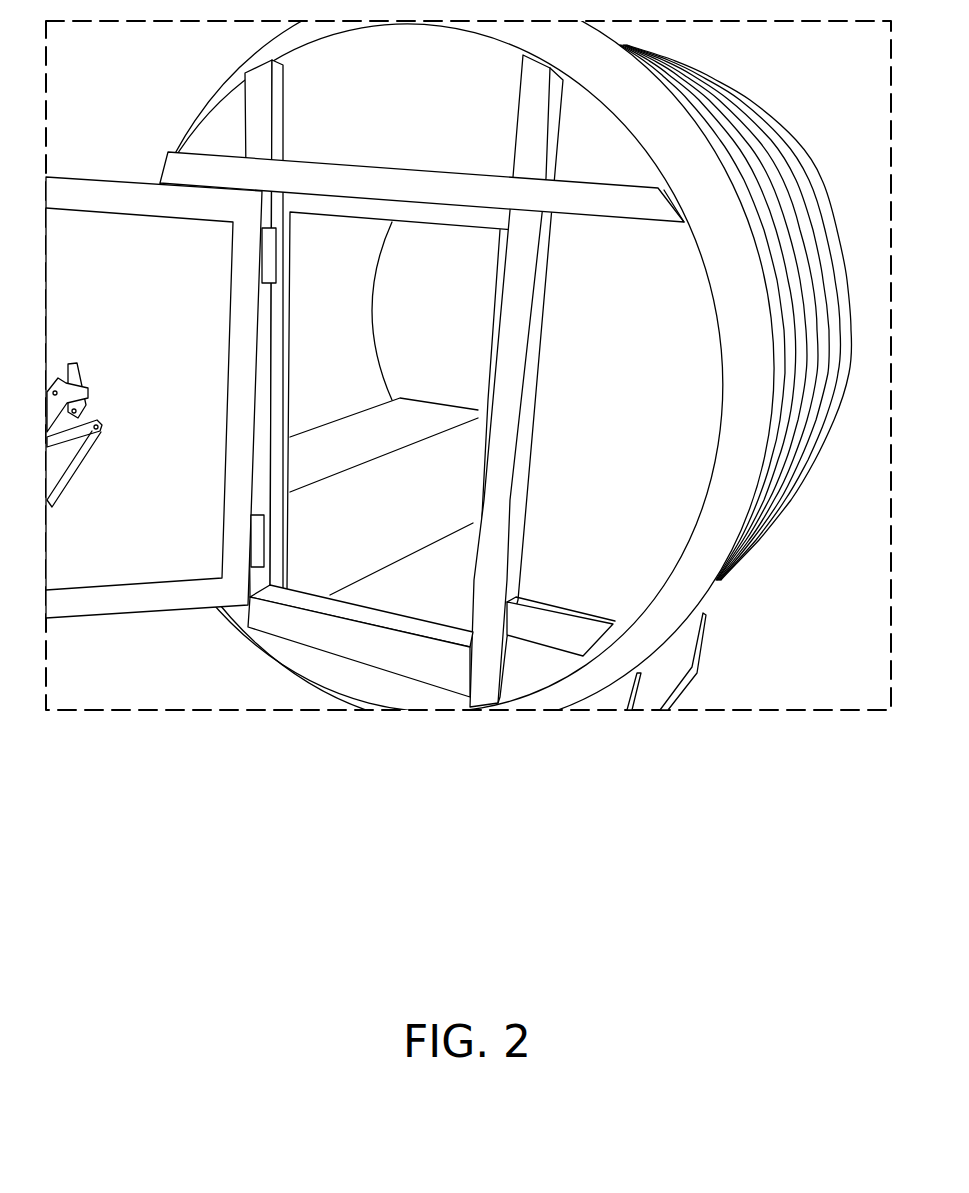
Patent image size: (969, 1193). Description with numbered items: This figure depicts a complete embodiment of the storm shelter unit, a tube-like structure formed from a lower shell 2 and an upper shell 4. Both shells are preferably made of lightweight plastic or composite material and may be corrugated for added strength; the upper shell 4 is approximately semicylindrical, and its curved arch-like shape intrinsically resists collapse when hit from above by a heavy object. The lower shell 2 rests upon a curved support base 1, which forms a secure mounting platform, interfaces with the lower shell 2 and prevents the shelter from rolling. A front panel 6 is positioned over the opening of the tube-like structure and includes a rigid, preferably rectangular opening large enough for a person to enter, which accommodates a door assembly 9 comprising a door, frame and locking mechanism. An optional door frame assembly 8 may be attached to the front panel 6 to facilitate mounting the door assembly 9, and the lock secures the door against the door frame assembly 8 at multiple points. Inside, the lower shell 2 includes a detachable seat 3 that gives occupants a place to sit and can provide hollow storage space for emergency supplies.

The support base 1 is at (697, 677).
The lower shell 2 is at (767, 527).
The seat 3 is at (367, 556).
The upper shell 4 is at (763, 142).
The front panel 6 is at (223, 122).
The door frame assembly 8 is at (340, 637).
The door assembly 9 is at (110, 312).